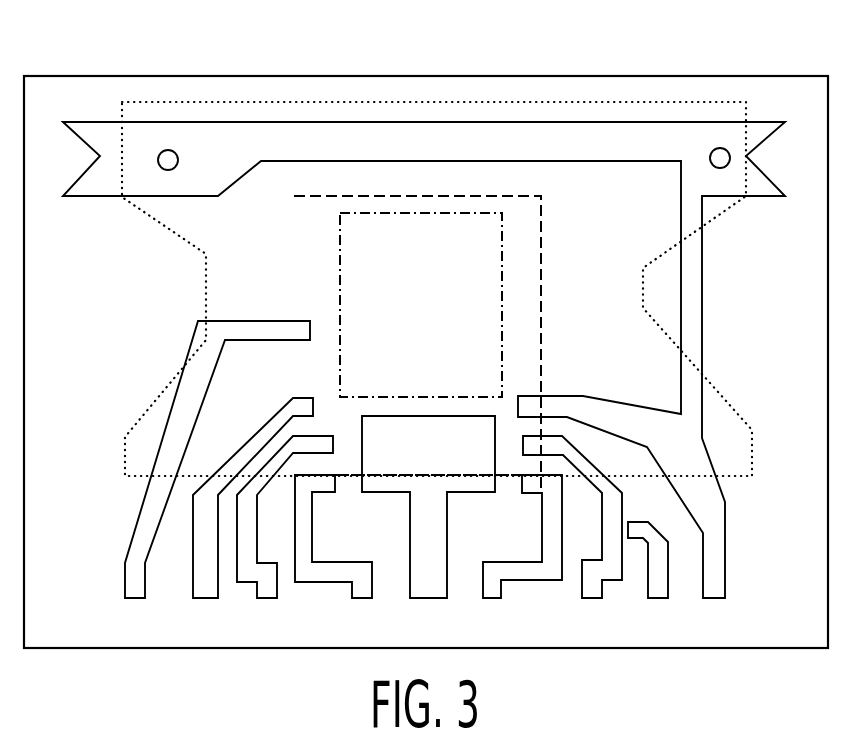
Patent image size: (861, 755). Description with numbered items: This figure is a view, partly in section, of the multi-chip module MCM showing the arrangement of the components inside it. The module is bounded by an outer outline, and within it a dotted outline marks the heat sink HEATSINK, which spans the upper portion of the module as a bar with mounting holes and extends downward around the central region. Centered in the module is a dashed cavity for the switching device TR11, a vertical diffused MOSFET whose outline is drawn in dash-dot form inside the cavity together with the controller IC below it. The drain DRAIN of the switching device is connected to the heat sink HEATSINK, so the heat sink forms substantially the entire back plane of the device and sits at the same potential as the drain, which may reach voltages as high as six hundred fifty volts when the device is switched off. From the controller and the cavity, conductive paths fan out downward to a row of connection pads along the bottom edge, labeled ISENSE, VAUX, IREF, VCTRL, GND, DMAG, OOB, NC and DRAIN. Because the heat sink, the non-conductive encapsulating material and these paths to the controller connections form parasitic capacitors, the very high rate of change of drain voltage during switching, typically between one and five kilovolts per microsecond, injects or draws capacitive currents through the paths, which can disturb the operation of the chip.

The multi-chip module MCM is at (589, 76).
The heat sink HEATSINK is at (538, 102).
The switching device TR11 is at (502, 260).
The drain DRAIN is at (424, 378).
The controller IC and ground pad GND is at (457, 417).
The ISENSE trace and pad ISENSE is at (206, 478).
The VAUX trace and pad VAUX is at (247, 516).
The IREF trace and pad IREF is at (285, 535).
The VCTRL trace and pad VCTRL is at (336, 555).
The DMAG trace and pad DMAG is at (522, 555).
The OOB trace and pad OOB is at (572, 535).
The NC pad NC is at (650, 578).